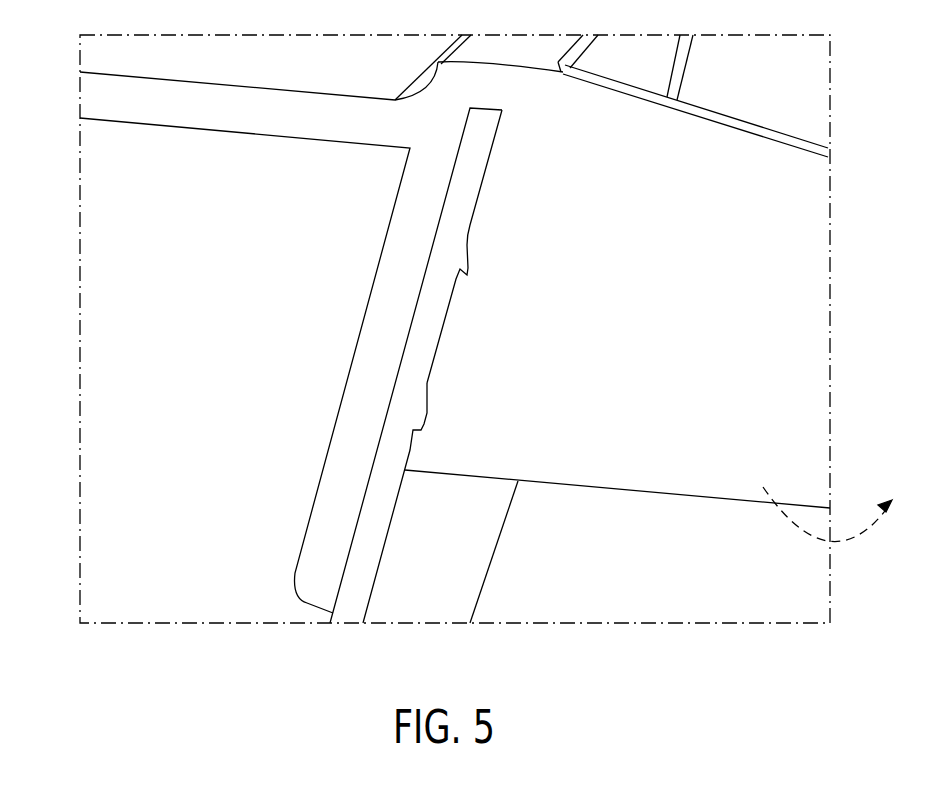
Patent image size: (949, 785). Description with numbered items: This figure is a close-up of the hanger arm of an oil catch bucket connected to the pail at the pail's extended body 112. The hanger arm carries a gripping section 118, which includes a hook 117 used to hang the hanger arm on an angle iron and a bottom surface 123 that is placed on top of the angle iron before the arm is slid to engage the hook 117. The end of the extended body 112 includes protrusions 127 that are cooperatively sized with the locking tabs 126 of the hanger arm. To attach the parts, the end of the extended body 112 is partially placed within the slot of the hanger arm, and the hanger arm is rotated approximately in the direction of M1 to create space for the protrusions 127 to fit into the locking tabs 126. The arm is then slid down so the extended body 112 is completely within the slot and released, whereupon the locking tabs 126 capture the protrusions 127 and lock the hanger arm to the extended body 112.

The extended body 112 is at (497, 390).
The hook 117 is at (490, 158).
The gripping section 118 is at (803, 293).
The bottom surface 123 is at (707, 498).
The locking tab 126 is at (462, 277).
The protrusion 127 is at (423, 428).
The direction of rotation M1 is at (838, 507).